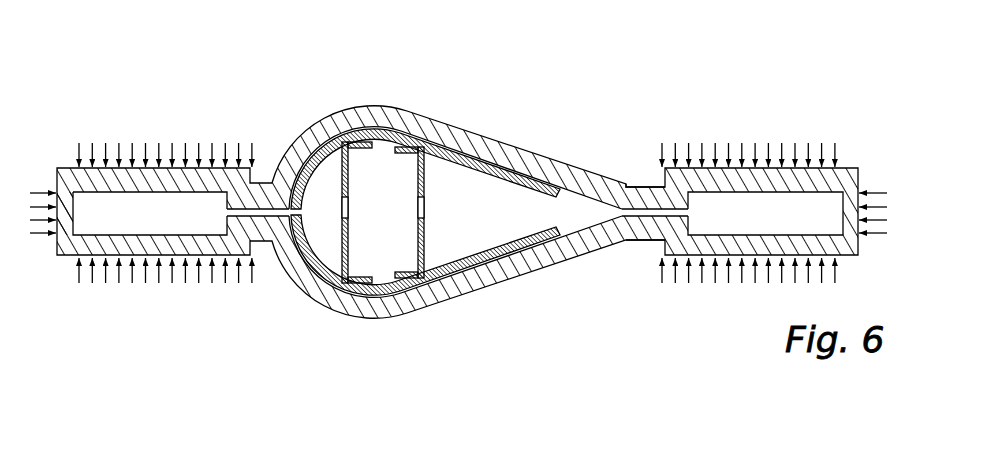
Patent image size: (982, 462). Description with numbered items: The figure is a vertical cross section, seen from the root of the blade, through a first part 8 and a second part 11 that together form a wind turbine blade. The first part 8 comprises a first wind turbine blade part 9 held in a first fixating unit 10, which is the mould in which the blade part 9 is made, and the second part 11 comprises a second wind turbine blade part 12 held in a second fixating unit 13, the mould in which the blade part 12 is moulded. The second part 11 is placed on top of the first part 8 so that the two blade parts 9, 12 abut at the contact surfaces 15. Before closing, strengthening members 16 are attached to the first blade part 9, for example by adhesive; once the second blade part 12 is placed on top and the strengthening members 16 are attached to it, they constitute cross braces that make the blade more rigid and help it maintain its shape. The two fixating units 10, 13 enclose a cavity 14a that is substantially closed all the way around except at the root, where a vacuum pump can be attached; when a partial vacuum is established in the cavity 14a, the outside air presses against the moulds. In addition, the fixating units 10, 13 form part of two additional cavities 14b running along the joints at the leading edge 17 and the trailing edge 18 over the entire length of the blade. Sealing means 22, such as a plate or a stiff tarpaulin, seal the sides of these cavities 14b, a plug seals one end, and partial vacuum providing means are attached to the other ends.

The first part 8 is at (457, 206).
The first wind turbine blade part 9 is at (377, 288).
The first fixating unit 10 is at (442, 290).
The second part 11 is at (297, 112).
The second wind turbine blade part 12 is at (368, 130).
The second fixating unit 13 is at (439, 192).
The cavity 14a is at (472, 200).
The additional cavities 14b is at (138, 215).
The contact surfaces 15 is at (640, 211).
The strengthening members 16 is at (425, 223).
The leading edge 17 is at (288, 213).
The trailing edge 18 is at (627, 230).
The sealing means 22 is at (65, 218).